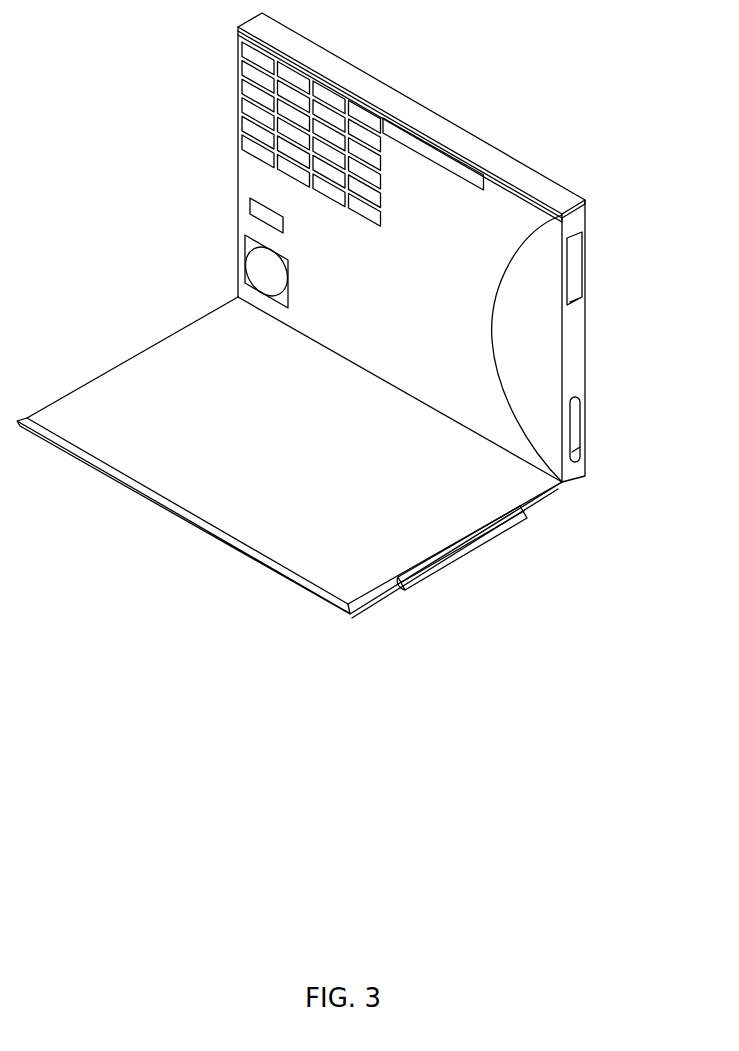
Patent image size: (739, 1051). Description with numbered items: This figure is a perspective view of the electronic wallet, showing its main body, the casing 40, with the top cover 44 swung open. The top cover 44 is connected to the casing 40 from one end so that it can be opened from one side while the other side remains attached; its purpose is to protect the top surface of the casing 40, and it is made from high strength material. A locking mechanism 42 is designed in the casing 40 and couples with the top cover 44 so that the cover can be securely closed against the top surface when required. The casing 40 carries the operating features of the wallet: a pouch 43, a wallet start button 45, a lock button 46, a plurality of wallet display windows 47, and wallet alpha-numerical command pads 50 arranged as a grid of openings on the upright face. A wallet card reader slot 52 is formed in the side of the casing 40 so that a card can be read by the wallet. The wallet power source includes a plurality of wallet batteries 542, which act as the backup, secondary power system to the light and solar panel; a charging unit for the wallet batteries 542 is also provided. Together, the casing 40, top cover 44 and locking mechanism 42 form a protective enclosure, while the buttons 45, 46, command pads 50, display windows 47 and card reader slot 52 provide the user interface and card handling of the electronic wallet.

The casing 40 is at (565, 181).
The locking mechanism 42 is at (458, 567).
The pouch 43 is at (508, 323).
The top cover 44 is at (223, 502).
The wallet start button 45 is at (255, 266).
The lock button 46 is at (268, 212).
The wallet display windows 47 is at (457, 163).
The wallet alpha-numerical command pads 50 is at (247, 48).
The wallet card reader slot 52 is at (575, 457).
The wallet batteries 542 is at (575, 298).